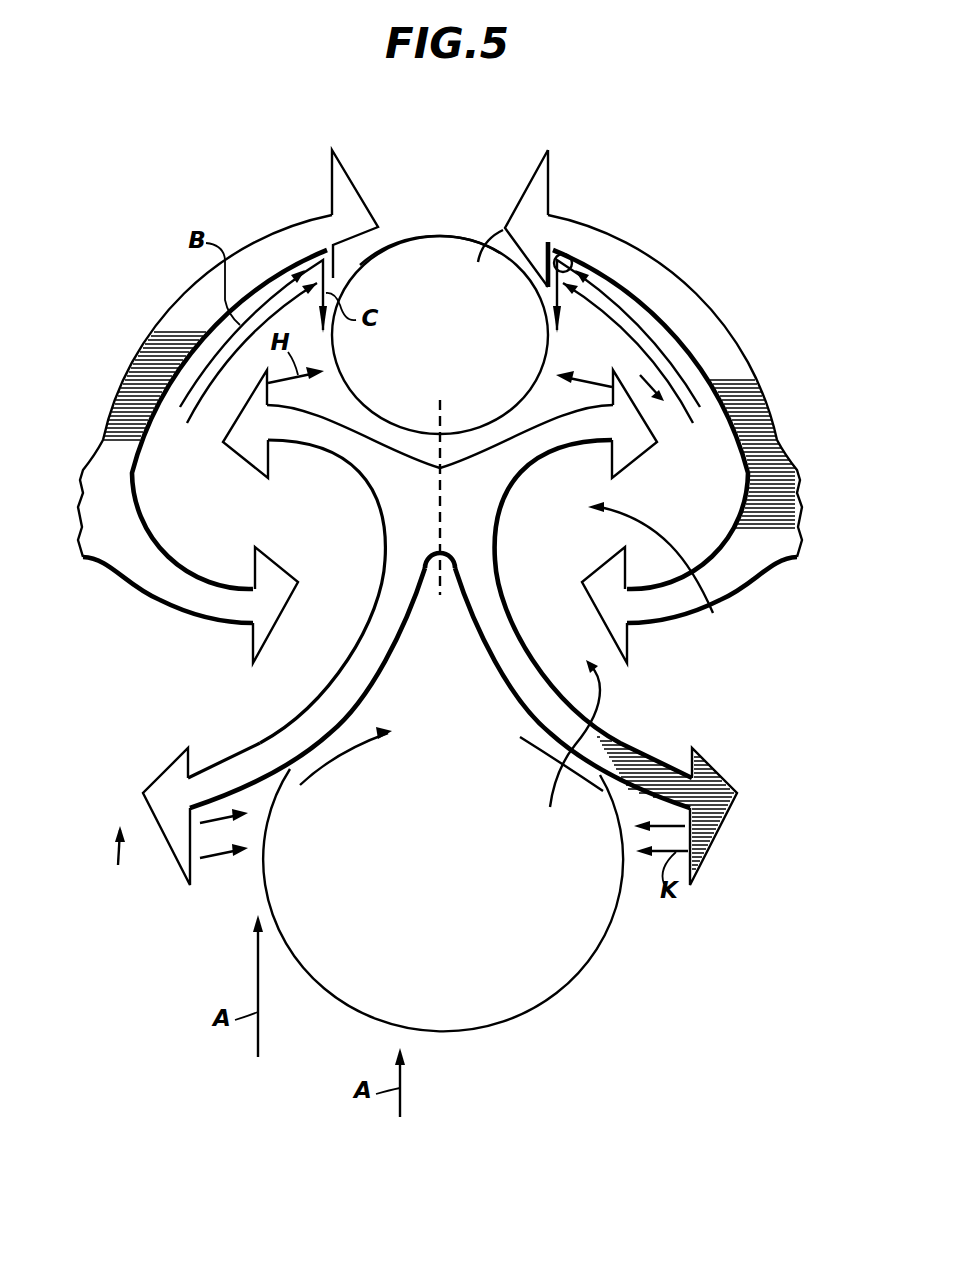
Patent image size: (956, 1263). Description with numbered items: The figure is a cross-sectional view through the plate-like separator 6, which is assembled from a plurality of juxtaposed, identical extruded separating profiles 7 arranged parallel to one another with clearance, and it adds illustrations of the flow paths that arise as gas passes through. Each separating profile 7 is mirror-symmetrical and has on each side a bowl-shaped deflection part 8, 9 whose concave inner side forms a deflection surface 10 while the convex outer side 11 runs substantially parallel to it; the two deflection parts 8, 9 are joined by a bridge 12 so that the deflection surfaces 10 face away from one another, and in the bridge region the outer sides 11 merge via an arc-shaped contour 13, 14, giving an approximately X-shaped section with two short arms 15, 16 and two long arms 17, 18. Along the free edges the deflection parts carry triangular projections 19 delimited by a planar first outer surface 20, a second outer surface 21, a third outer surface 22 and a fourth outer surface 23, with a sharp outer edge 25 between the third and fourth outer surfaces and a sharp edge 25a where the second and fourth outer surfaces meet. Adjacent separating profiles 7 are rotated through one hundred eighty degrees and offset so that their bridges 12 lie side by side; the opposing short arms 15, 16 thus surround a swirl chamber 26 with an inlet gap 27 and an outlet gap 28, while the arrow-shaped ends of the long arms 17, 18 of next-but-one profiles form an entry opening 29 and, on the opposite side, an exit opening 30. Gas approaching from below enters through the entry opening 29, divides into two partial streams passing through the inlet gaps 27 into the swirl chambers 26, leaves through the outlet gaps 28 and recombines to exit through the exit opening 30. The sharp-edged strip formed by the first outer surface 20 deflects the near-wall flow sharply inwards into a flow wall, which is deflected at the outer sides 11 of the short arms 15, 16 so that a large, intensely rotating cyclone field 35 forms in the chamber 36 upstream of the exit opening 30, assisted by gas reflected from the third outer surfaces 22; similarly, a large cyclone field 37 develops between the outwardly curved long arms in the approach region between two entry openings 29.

The plate-like separator 6 is at (203, 168).
The separating profile 7 is at (226, 742).
The deflection part 8 is at (640, 735).
The deflection part 9 is at (268, 722).
The deflection surface 10 is at (343, 657).
The outer side 11 is at (383, 657).
The bridge 12 is at (424, 521).
The arc-shaped contour 13 is at (447, 562).
The arc-shaped contour 14 is at (457, 460).
The short arm 15 is at (538, 407).
The short arm 16 is at (335, 407).
The long arm 17 is at (530, 692).
The long arm 18 is at (273, 763).
The projection 19 is at (500, 205).
The first outer surface 20 is at (566, 255).
The second outer surface 21 is at (522, 272).
The third outer surface 22 is at (552, 173).
The fourth outer surface 23 is at (533, 167).
The sharp outer edge 25 is at (548, 147).
The sharp edge 25a is at (474, 265).
The swirl chamber 26 is at (713, 613).
The inlet gap 27 is at (561, 749).
The outlet gap 28 is at (720, 388).
The entry opening 29 is at (118, 865).
The exit opening 30 is at (395, 158).
The cyclone field 35 is at (405, 240).
The chamber 36 is at (424, 358).
The cyclone field 37 is at (573, 983).